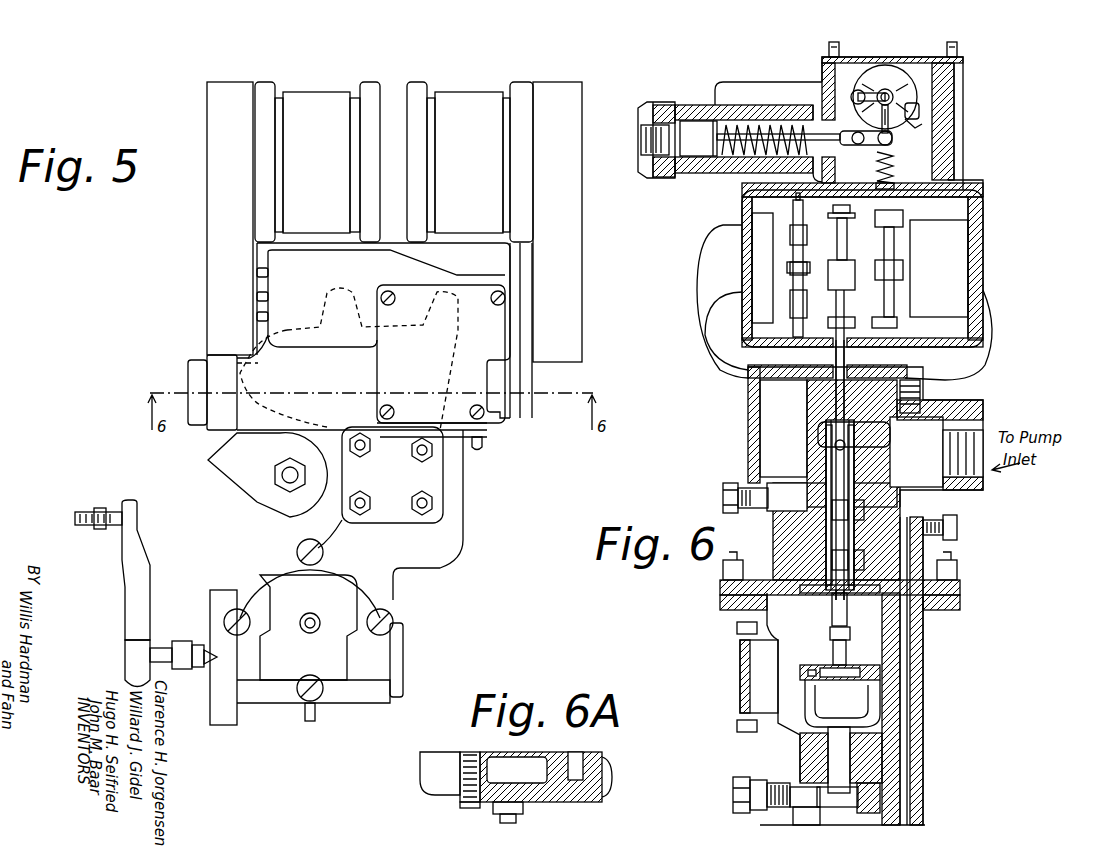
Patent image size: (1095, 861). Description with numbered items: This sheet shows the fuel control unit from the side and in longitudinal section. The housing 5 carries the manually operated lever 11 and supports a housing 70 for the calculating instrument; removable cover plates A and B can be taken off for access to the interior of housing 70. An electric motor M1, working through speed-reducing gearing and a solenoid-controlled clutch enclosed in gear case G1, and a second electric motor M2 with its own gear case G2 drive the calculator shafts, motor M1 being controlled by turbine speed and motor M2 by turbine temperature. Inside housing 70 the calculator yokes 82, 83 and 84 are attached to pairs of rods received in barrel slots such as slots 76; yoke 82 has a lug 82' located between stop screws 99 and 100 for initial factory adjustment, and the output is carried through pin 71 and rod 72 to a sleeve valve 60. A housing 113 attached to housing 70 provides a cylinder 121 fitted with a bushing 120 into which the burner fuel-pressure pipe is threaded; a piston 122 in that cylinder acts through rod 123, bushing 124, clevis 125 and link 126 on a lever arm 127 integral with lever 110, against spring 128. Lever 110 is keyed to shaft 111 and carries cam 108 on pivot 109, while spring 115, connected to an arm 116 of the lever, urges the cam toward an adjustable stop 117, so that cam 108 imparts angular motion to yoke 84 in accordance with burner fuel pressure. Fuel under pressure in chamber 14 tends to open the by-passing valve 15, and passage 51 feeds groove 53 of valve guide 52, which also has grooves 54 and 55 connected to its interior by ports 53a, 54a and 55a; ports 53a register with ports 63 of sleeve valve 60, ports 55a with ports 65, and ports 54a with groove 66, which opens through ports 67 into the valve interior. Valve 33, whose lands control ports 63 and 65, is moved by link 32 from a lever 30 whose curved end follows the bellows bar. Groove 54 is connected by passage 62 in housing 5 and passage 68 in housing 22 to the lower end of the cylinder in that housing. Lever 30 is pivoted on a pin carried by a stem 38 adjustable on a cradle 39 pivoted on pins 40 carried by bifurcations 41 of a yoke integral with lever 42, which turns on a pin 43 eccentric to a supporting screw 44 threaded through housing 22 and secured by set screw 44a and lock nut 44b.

In FIG. 5, the gear case G2 is at (250, 72).
In FIG. 5, the electric motor M2 is at (333, 82).
In FIG. 5, the electric motor M1 is at (475, 92).
In FIG. 5, the gear case G1 is at (569, 82).
In FIG. 5, the removable cover plate A is at (480, 388).
In FIG. 6, the removable cover plate A is at (948, 60).
In FIG. 5, the housing 70 is at (444, 365).
In FIG. 5, the removable cover plate B is at (487, 433).
In FIG. 5, the housing 113 is at (275, 437).
In FIG. 6, the housing 113 is at (740, 72).
In FIG. 5, the housing 5 is at (455, 522).
In FIG. 6, the housing 5 is at (748, 411).
In FIG. 5, the manually operated lever 11 is at (137, 550).
In FIG. 6, the bushing 120 is at (640, 141).
In FIG. 6, the cylinder 121 is at (676, 105).
In FIG. 6, the piston 122 is at (698, 138).
In FIG. 6, the rod 123 is at (763, 123).
In FIG. 6, the spring 128 is at (787, 123).
In FIG. 6, the bushing 124 is at (822, 84).
In FIG. 6, the arm 116 is at (888, 90).
In FIG. 6, the pivot 109 is at (857, 90).
In FIG. 6, the lever 110 is at (882, 90).
In FIG. 6, the shaft 111 is at (893, 97).
In FIG. 6, the spring 115 is at (905, 95).
In FIG. 6, the stop 117 is at (922, 125).
In FIG. 6, the lever arm 127 is at (850, 128).
In FIG. 6, the clevis 125 is at (850, 136).
In FIG. 6, the link 126 is at (856, 148).
In FIG. 6, the cam 108 is at (893, 160).
In FIG. 6, the yoke 82 is at (844, 268).
In FIG. 6, the stop screw 99 is at (800, 249).
In FIG. 6, the stop screw 100 is at (790, 288).
In FIG. 6, the rod 72 is at (833, 355).
In FIG. 6, the yoke 84 is at (900, 214).
In FIG. 6, the chamber 14 is at (790, 240).
In FIG. 6, the lug 82' is at (780, 271).
In FIG. 6, the by-passing valve 15 is at (837, 238).
In FIG. 6, the yoke 83 is at (838, 213).
In FIG. 6, the slots 76 is at (884, 241).
In FIG. 6, the passage 62 is at (950, 508).
In FIG. 6, the sleeve valve 60 is at (893, 432).
In FIG. 6, the pin 71 is at (852, 441).
In FIG. 6, the ports 63 is at (847, 493).
In FIG. 6, the groove 66 is at (853, 495).
In FIG. 6, the ports 67 is at (850, 520).
In FIG. 6, the valve guide 52 is at (820, 485).
In FIG. 6, the passage 51 is at (760, 520).
In FIG. 6, the groove 53 is at (826, 520).
In FIG. 6, the ports 53a is at (826, 530).
In FIG. 6, the groove 54 is at (826, 540).
In FIG. 6, the ports 54a is at (826, 555).
In FIG. 6, the ports 65 is at (864, 540).
In FIG. 6, the valve 33 is at (864, 560).
In FIG. 6, the groove 55 is at (822, 560).
In FIG. 6, the ports 55a is at (823, 593).
In FIG. 6, the housing 22 is at (923, 684).
In FIG. 6A, the housing 22 is at (426, 790).
In FIG. 6, the passage 68 is at (908, 645).
In FIG. 6A, the passage 68 is at (600, 760).
In FIG. 6, the bifurcations 41 is at (800, 685).
In FIG. 6, the link 32 is at (846, 622).
In FIG. 6, the lever 30 is at (820, 690).
In FIG. 6, the stem 38 is at (852, 665).
In FIG. 6, the cradle 39 is at (820, 668).
In FIG. 6, the pins 40 is at (803, 680).
In FIG. 6, the lever 42 is at (833, 753).
In FIG. 6, the pin 43 is at (857, 783).
In FIG. 6, the supporting screw 44 is at (800, 770).
In FIG. 6, the set screw 44a is at (790, 826).
In FIG. 6, the lock nut 44b is at (750, 810).